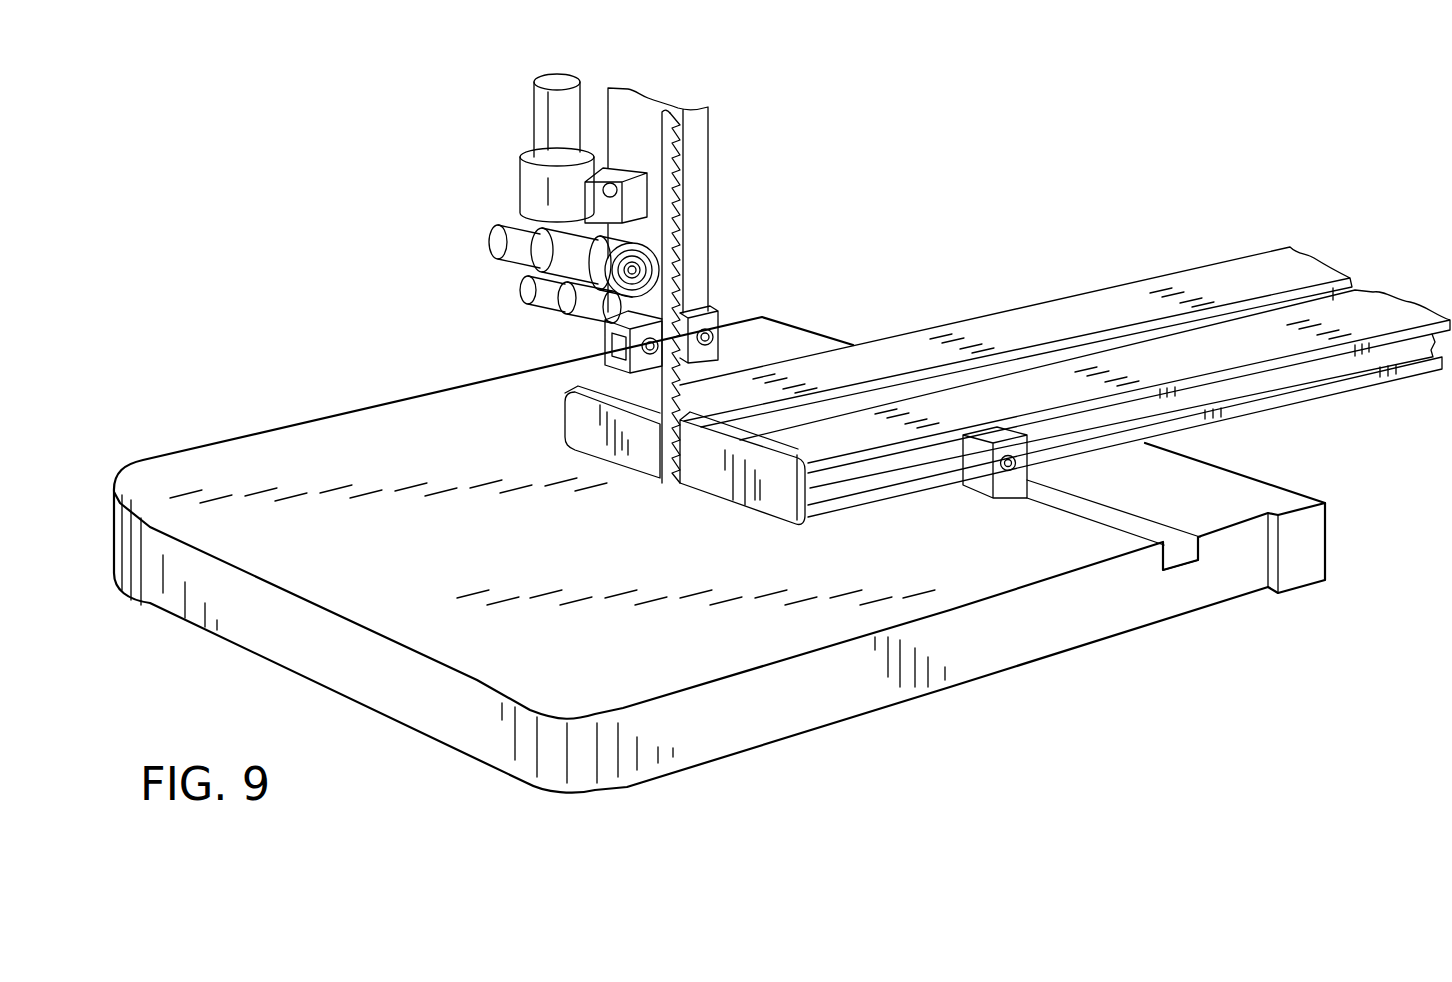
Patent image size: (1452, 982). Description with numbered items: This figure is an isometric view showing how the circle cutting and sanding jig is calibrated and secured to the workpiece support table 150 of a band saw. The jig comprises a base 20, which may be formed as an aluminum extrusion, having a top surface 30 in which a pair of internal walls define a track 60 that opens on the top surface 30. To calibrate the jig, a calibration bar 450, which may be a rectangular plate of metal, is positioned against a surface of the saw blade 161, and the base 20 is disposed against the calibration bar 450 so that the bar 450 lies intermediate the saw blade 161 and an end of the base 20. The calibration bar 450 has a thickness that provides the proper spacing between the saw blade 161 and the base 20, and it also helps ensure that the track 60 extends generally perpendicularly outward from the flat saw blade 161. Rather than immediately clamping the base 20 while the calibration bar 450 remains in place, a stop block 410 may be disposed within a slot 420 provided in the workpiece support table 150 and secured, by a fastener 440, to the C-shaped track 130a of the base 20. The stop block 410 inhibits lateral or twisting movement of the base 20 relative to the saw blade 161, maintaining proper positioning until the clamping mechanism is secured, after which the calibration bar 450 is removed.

The base 20 is at (1198, 252).
The top surface 30 is at (1026, 318).
The track 60 is at (1368, 270).
The C-shaped track 130a is at (1273, 392).
The workpiece support table 150 is at (1007, 689).
The saw blade 161 is at (683, 200).
The stop block 410 is at (1032, 490).
The slot 420 is at (1191, 572).
The fastener 440 is at (1016, 467).
The calibration bar 450 is at (550, 415).